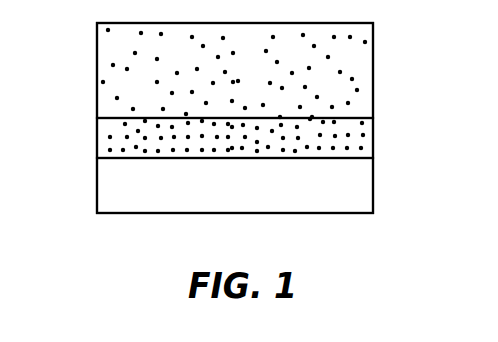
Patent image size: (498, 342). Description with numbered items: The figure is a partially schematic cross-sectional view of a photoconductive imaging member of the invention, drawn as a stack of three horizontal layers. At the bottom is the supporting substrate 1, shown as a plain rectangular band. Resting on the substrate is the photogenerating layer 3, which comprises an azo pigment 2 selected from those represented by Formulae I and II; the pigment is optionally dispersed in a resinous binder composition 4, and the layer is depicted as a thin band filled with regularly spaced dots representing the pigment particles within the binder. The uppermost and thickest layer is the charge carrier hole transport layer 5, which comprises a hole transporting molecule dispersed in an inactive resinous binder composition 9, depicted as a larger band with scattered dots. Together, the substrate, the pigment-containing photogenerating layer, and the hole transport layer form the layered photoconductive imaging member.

The supporting substrate 1 is at (373, 189).
The azo pigment 2 is at (230, 137).
The photogenerating layer 3 is at (373, 122).
The resinous binder composition 4 is at (110, 137).
The charge carrier hole transport layer 5 is at (229, 69).
The inactive resinous binder composition 9 is at (108, 31).